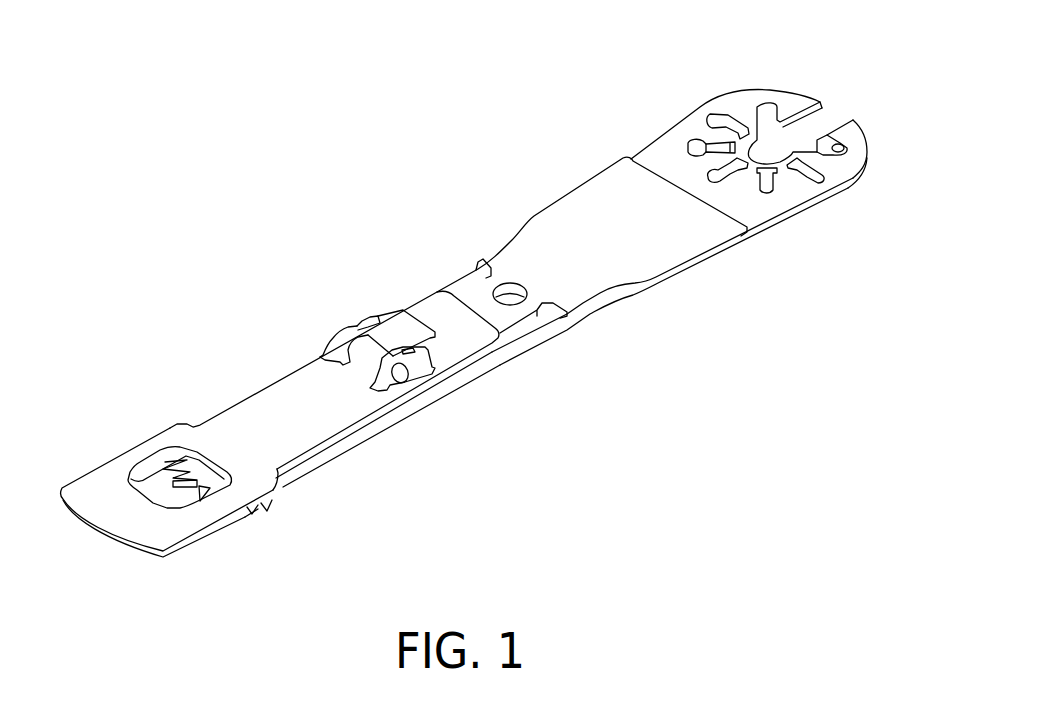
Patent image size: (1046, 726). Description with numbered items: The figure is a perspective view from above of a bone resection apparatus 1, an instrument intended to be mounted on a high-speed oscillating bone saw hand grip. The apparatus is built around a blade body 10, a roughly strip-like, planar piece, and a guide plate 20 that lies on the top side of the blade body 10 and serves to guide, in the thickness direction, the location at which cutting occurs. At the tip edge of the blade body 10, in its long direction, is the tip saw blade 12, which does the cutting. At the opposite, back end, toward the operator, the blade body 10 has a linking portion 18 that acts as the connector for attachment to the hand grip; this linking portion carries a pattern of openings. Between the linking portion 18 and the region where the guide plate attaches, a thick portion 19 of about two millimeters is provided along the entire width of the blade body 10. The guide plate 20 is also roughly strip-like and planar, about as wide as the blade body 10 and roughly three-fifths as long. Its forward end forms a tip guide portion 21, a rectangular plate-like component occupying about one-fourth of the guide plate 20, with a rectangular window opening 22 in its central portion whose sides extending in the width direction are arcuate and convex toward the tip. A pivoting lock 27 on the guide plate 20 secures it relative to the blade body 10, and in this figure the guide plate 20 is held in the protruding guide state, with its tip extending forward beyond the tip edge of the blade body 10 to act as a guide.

The bone resection apparatus 1 is at (408, 163).
The blade body 10 is at (720, 251).
The tip saw blade 12 is at (256, 512).
The linking portion 18 is at (718, 94).
The thick portion 19 is at (578, 186).
The guide plate 20 is at (268, 380).
The tip guide portion 21 is at (105, 462).
The window opening 22 is at (163, 490).
The pivoting lock 27 is at (393, 330).